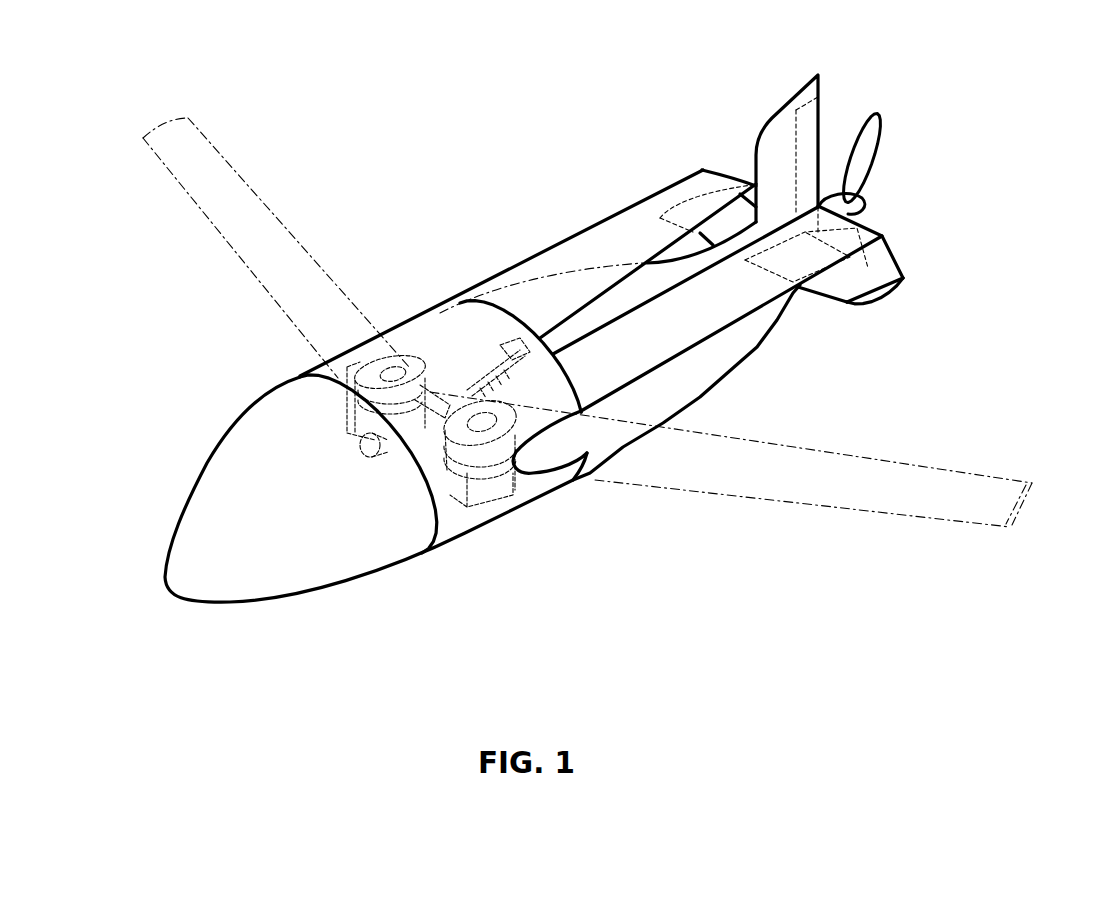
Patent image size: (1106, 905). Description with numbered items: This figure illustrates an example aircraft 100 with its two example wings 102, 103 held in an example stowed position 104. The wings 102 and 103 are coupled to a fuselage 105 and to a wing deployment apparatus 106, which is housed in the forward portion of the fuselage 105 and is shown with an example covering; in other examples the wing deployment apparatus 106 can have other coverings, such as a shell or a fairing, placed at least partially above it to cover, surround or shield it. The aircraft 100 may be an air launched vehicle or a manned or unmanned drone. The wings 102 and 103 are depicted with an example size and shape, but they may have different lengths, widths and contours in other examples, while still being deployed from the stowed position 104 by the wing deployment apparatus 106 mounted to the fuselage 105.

The aircraft 100 is at (977, 720).
The wing 102 is at (718, 168).
The wing 103 is at (880, 228).
The stowed position 104 is at (830, 357).
The fuselage 105 is at (198, 517).
The wing deployment apparatus 106 is at (323, 423).